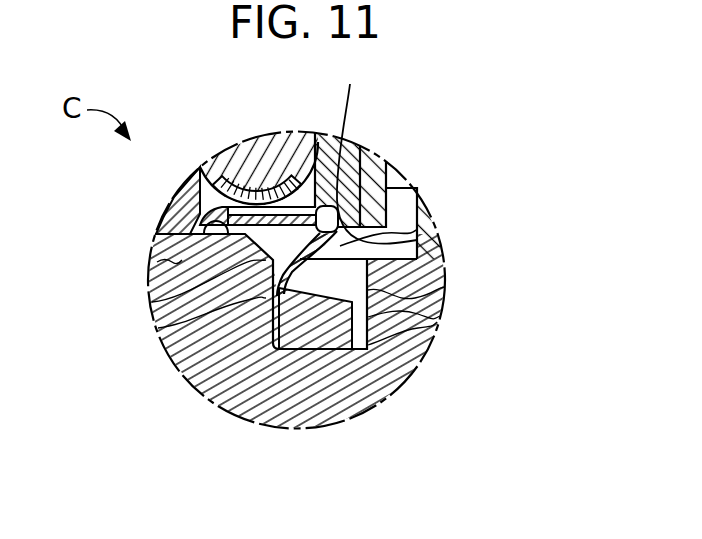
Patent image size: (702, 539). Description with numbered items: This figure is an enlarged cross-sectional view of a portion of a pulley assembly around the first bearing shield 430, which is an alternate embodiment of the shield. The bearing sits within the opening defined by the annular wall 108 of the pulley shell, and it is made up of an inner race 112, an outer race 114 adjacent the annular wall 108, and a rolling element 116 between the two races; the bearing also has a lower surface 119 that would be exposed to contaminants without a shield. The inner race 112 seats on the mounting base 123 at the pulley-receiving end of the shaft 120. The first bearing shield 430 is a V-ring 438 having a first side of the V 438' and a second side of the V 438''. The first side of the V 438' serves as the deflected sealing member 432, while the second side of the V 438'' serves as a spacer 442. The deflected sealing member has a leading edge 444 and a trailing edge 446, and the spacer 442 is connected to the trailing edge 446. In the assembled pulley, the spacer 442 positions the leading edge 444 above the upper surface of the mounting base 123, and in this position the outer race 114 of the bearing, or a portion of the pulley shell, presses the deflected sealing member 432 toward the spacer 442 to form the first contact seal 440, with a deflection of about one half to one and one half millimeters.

The annular wall 108 is at (376, 157).
The inner race 112 is at (175, 208).
The outer race 114 is at (325, 150).
The rolling element 116 is at (262, 148).
The lower surface 119 is at (160, 235).
The shaft 120 is at (338, 410).
The mounting base 123 is at (157, 262).
The first bearing shield 430 is at (445, 289).
The deflected sealing member 432 is at (427, 233).
The V-ring 438 is at (433, 316).
The first side of the V 438' is at (178, 284).
The second side of the V 438'' is at (177, 319).
The first contact seal 440 is at (375, 152).
The spacer 442 is at (437, 325).
The leading edge 444 is at (432, 243).
The trailing edge 446 is at (293, 276).